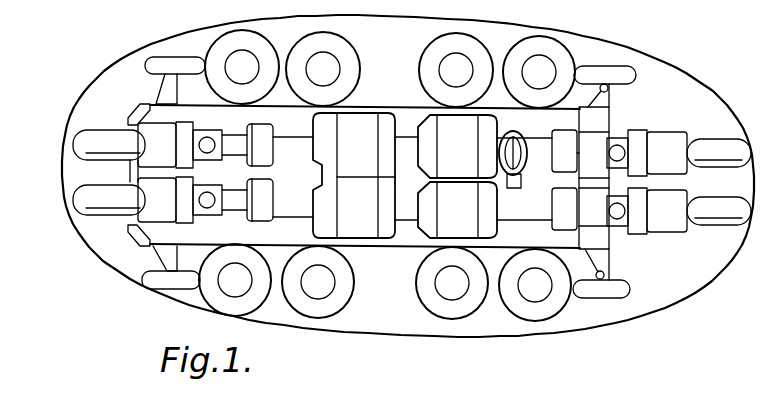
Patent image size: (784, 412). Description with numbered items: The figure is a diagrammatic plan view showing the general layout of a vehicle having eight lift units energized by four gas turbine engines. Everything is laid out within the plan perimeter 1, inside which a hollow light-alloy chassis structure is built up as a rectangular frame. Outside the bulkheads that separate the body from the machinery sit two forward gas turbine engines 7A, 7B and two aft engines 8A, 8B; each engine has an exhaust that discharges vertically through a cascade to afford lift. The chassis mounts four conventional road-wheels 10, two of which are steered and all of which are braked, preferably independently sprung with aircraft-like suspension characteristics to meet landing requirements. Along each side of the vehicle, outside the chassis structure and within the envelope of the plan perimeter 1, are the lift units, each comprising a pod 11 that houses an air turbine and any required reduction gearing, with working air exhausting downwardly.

The plan perimeter 1 is at (405, 18).
The forward gas turbine engine 7A is at (667, 136).
The forward gas turbine engine 7B is at (665, 224).
The aft gas turbine engine 8A is at (160, 132).
The aft gas turbine engine 8B is at (160, 208).
The road-wheel 10 is at (160, 62).
The pod 11 is at (538, 293).